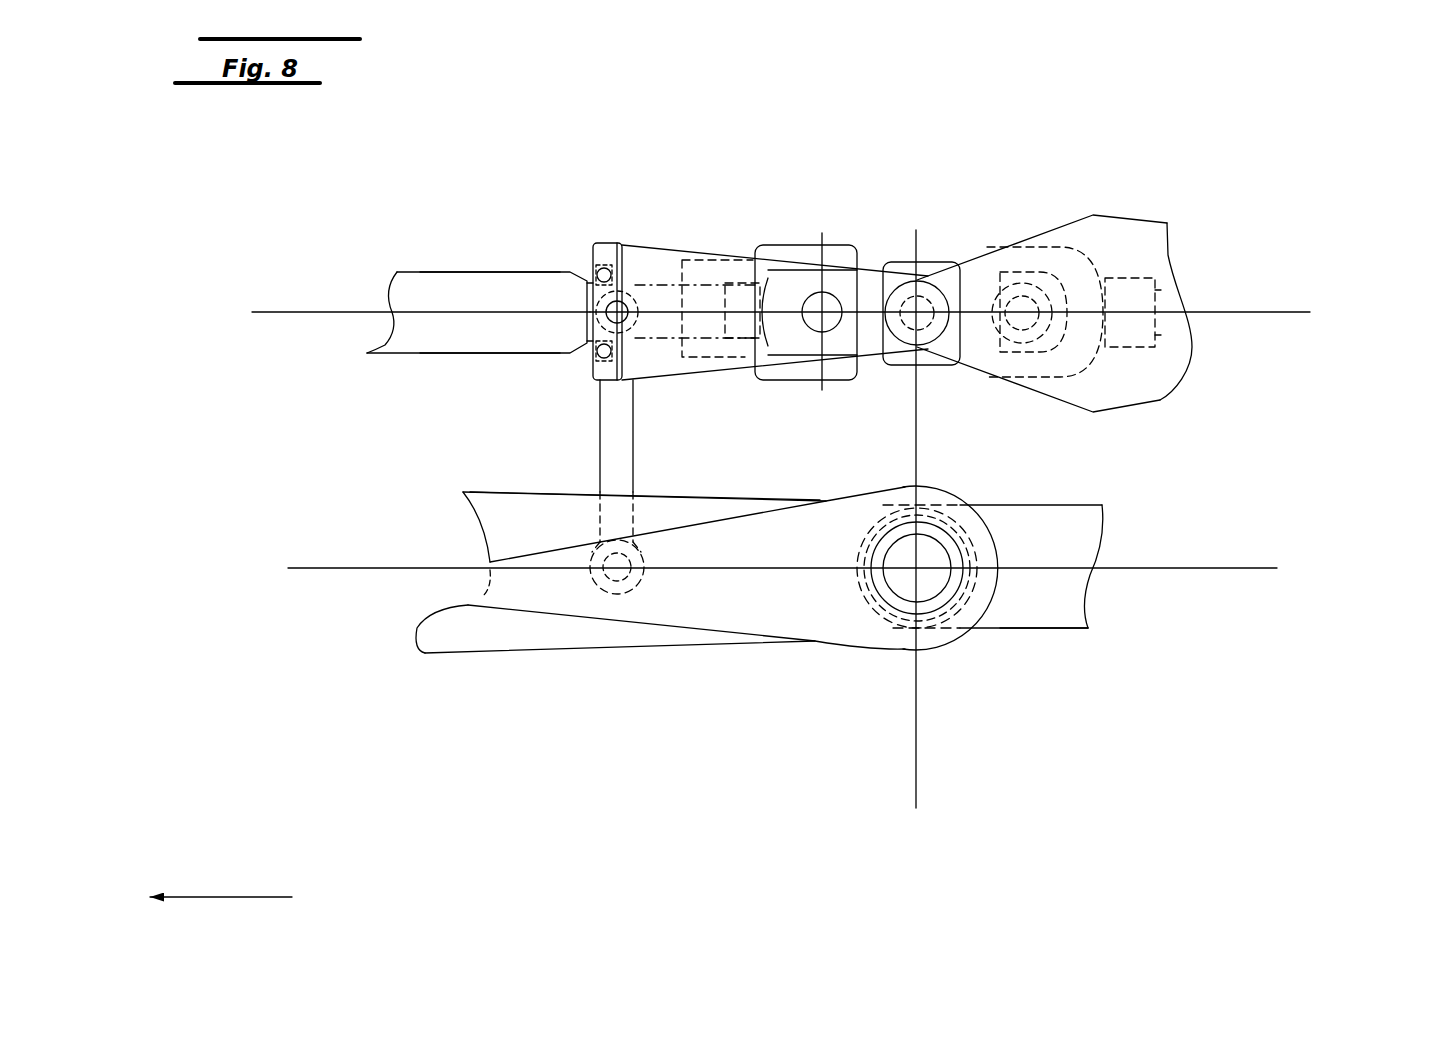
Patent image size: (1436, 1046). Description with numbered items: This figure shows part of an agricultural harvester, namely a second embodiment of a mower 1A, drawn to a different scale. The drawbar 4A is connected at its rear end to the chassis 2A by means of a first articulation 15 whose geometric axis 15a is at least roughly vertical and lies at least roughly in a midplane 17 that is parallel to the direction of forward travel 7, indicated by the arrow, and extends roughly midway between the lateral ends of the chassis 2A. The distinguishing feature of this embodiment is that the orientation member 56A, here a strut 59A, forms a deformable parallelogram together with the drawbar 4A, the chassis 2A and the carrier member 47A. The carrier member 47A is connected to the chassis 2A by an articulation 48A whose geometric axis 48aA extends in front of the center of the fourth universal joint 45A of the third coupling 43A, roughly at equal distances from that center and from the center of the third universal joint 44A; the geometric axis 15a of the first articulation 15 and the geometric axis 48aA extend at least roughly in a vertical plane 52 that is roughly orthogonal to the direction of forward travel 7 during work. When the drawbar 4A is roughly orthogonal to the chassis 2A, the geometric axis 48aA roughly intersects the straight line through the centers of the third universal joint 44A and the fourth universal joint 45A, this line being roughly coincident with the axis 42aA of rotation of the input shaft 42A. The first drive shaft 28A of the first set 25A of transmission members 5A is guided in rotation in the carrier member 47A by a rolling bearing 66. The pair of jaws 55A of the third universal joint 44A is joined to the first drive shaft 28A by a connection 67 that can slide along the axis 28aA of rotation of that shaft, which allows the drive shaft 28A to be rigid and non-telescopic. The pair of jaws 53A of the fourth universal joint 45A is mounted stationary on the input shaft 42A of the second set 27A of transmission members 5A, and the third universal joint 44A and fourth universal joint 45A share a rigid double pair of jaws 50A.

The axis of rotation 28aA is at (280, 311).
The first drive shaft 28A is at (412, 290).
The first set of transmission members 25A is at (382, 356).
The transmission members 5A is at (495, 270).
The strut 59A is at (607, 404).
The rolling bearing 66 is at (617, 348).
The orientation member 56A is at (598, 452).
The carrier member 47A is at (644, 262).
The sliding connection 67 is at (705, 282).
The pair of jaws 55A is at (802, 252).
The third universal joint 44A is at (814, 240).
The articulation 48A is at (885, 290).
The geometric axis 48aA is at (918, 312).
The third coupling 43A is at (932, 278).
The fourth universal joint 45A is at (1052, 245).
The input shaft 42A is at (1178, 327).
The axis of rotation 42aA is at (1300, 311).
The pair of jaws 53A is at (1132, 285).
The second set of transmission members 27A is at (1174, 287).
The rigid double pair of jaws 50A is at (922, 362).
The chassis 2A is at (1162, 402).
The drawbar 4A is at (497, 655).
The first articulation 15 is at (898, 612).
The geometric axis 15a is at (917, 568).
The midplane 17 is at (1203, 568).
The mower 1A is at (1082, 632).
The vertical plane 52 is at (917, 795).
The direction of forward travel 7 is at (223, 897).